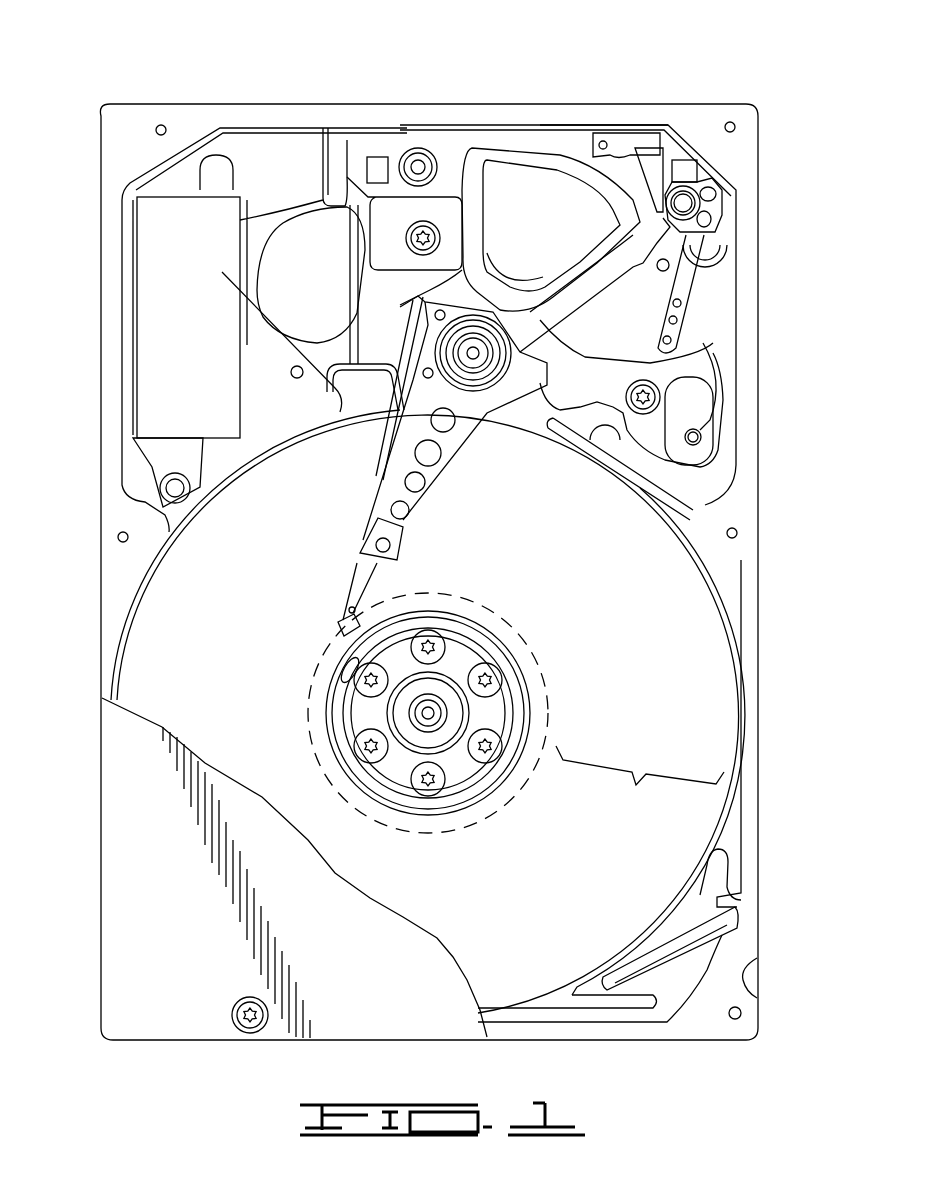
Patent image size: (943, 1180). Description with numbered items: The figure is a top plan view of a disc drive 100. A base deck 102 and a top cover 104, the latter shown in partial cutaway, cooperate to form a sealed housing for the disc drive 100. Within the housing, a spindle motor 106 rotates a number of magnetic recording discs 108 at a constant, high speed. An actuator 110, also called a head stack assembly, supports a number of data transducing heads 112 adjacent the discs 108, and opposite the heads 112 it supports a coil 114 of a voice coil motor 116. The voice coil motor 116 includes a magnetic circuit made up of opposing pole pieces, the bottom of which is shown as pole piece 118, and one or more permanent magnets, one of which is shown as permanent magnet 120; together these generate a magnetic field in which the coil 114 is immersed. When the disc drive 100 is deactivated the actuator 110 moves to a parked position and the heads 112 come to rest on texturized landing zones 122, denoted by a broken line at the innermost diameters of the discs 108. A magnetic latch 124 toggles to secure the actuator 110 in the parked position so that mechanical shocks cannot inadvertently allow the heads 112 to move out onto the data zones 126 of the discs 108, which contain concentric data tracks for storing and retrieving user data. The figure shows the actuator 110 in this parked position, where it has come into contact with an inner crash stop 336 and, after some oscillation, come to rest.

The disc drive 100 is at (163, 78).
The base deck 102 is at (262, 347).
The top cover 104 is at (122, 748).
The spindle motor 106 is at (447, 690).
The magnetic recording discs 108 is at (682, 705).
The actuator 110 is at (487, 415).
The data transducing heads 112 is at (333, 623).
The coil 114 is at (530, 150).
The voice coil motor 116 is at (577, 140).
The pole piece 118 is at (704, 318).
The permanent magnet 120 is at (640, 343).
The landing zones 122 is at (508, 832).
The magnetic latch 124 is at (716, 215).
The data zones 126 is at (634, 787).
The inner crash stop 336 is at (416, 148).